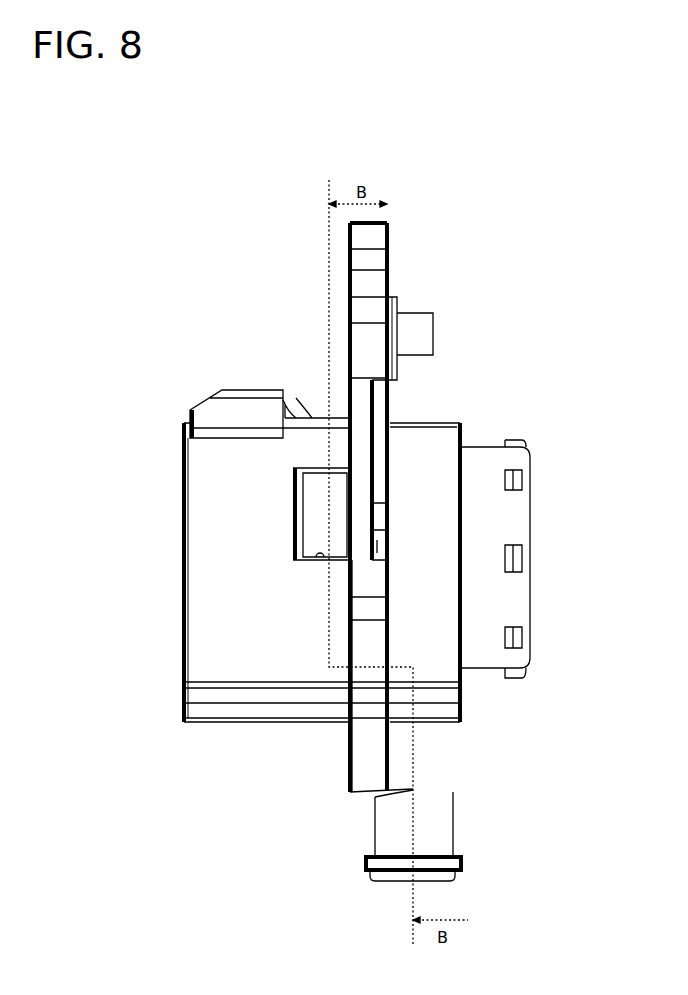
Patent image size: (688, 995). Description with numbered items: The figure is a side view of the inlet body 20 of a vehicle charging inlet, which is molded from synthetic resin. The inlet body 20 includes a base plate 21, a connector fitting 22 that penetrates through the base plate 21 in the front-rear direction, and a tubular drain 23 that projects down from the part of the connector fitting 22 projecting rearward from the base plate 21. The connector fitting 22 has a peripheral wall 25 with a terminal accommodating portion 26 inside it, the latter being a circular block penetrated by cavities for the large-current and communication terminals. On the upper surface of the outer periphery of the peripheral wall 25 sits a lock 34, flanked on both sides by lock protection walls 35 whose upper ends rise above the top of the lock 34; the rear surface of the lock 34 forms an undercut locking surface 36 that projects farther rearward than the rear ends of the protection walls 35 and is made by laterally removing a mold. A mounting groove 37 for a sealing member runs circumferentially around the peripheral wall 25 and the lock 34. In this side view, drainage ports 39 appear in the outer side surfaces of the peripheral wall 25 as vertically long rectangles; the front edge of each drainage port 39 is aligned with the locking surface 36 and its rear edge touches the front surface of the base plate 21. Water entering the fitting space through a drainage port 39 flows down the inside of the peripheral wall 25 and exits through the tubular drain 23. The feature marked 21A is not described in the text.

The inlet body 20 is at (355, 144).
The base plate 21 is at (368, 228).
The plate portion 21A is at (372, 262).
The connector fitting 22 is at (190, 500).
The tubular drain 23 is at (443, 828).
The peripheral wall 25 is at (197, 602).
The terminal accommodating portion 26 is at (318, 520).
The lock 34 is at (289, 412).
The lock protection walls 35 is at (212, 410).
The locking surface 36 is at (302, 405).
The mounting groove 37 is at (362, 400).
The drainage port 39 is at (320, 560).